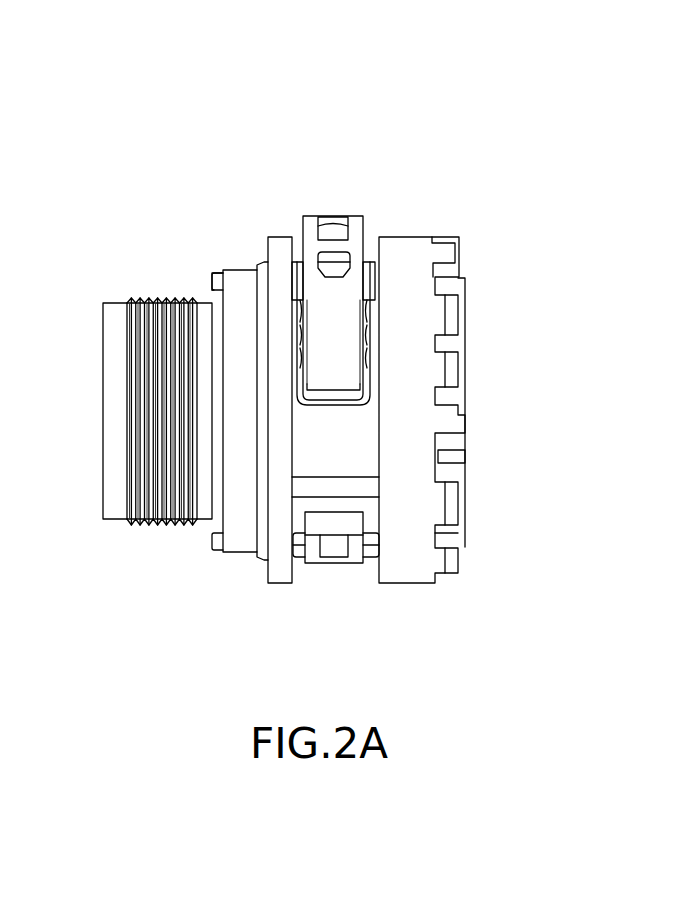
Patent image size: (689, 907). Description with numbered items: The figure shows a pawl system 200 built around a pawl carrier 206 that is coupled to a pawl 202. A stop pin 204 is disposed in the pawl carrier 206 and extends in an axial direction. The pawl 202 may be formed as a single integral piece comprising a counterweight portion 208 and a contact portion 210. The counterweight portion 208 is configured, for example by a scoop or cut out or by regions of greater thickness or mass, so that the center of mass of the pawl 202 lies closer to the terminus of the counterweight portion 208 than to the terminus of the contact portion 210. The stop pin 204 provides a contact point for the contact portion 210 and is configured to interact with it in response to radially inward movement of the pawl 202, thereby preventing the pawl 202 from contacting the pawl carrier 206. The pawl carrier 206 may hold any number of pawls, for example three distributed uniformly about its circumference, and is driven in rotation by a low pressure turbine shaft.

The pawl system 200 is at (157, 148).
The pawl 202 is at (357, 227).
The stop pin 204 is at (373, 505).
The pawl carrier 206 is at (437, 325).
The counterweight portion 208 is at (353, 373).
The contact portion 210 is at (305, 217).